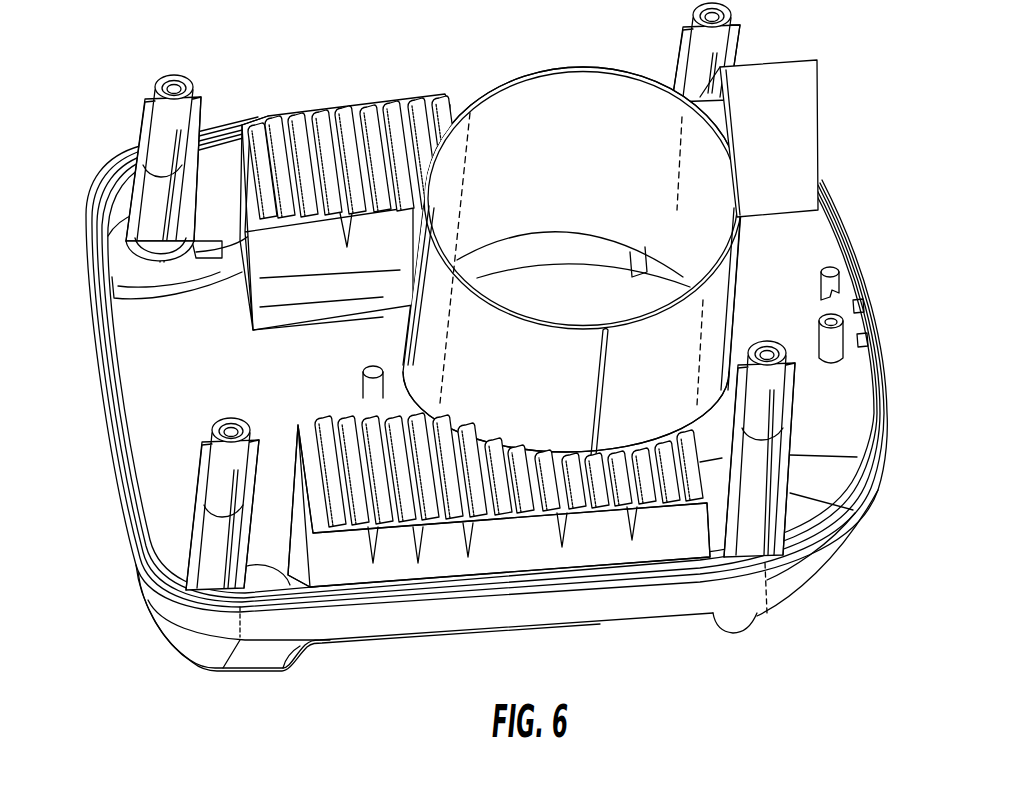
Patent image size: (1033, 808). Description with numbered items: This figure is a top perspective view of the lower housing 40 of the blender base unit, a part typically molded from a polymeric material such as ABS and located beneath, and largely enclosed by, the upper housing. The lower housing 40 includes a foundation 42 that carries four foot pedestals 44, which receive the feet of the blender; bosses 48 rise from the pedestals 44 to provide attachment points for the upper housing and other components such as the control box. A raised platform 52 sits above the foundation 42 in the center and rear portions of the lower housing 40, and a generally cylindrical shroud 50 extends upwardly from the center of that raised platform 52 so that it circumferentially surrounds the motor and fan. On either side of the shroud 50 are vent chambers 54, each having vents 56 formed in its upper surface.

The lower housing 40 is at (485, 376).
The foundation 42 is at (157, 395).
The foot pedestals 44 is at (262, 655).
The bosses 48 is at (180, 108).
The shroud 50 is at (727, 263).
The raised platform 52 is at (850, 362).
The vent chambers 54 is at (475, 362).
The vents 56 is at (341, 117).